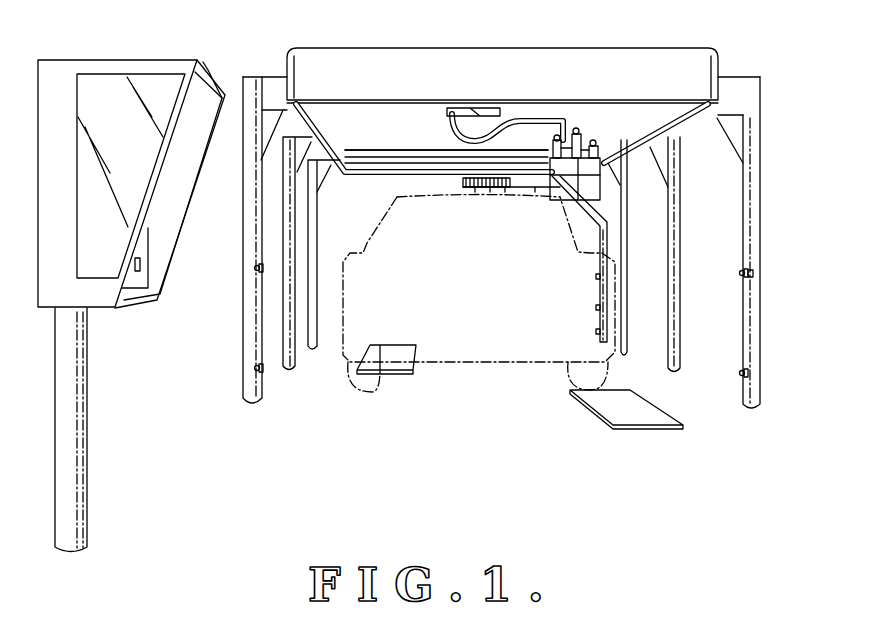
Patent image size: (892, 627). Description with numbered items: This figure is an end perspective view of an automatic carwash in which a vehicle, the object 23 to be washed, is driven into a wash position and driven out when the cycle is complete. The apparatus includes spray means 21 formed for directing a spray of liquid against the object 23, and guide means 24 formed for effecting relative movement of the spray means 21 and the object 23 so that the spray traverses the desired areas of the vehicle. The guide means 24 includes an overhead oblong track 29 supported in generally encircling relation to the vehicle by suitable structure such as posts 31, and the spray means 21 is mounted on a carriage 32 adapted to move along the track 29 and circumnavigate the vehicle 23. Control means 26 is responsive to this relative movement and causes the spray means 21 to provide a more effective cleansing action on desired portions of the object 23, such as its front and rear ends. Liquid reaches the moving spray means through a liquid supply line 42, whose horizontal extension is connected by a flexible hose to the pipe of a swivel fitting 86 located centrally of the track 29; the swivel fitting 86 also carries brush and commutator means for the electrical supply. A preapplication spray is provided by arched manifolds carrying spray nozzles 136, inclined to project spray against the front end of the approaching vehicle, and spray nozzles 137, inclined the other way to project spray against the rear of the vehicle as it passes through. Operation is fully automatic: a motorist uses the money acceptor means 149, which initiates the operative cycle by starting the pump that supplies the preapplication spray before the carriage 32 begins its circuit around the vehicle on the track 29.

The spray means 21 is at (542, 253).
The object to be washed 23 is at (487, 369).
The guide means 24 is at (504, 97).
The control means 26 is at (587, 128).
The overhead oblong track 29 is at (517, 58).
The posts 31 is at (310, 285).
The carriage 32 is at (576, 206).
The liquid supply line 42 is at (533, 116).
The swivel fitting 86 is at (450, 122).
The spray nozzles 136 is at (757, 277).
The spray nozzles 137 is at (740, 271).
The money acceptor means 149 is at (137, 283).